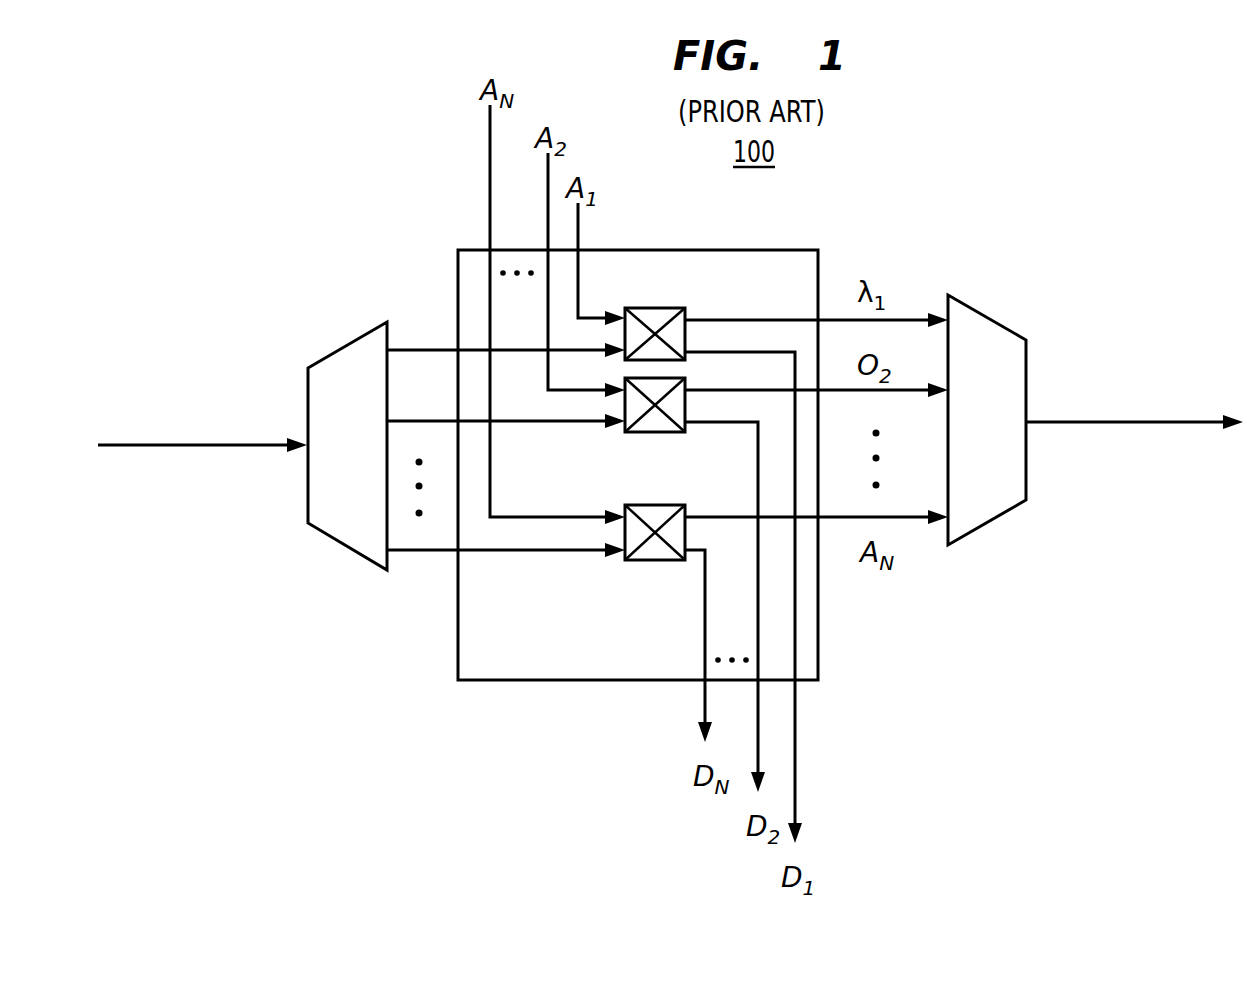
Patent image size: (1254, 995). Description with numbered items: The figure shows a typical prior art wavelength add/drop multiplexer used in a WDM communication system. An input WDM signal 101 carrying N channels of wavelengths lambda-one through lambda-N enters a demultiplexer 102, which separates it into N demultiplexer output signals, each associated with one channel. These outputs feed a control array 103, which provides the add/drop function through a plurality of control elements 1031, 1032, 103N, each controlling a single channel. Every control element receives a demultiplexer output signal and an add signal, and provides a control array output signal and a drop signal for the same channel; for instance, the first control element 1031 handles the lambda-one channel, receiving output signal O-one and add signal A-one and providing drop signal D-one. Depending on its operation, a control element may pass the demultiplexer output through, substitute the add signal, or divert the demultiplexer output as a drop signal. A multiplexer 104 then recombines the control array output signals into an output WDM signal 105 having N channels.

The WDM signal 101 is at (212, 450).
The demultiplexer 102 is at (348, 548).
The control array 103 is at (638, 500).
The control element 1031 is at (660, 308).
The control element 1032 is at (645, 432).
The control element 103N is at (627, 572).
The multiplexer 104 is at (985, 525).
The output WDM signal 105 is at (1100, 428).